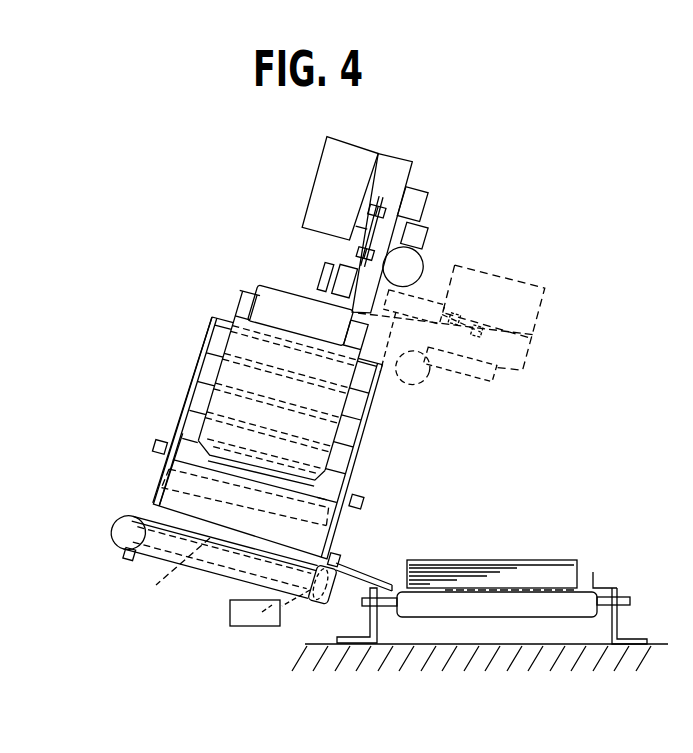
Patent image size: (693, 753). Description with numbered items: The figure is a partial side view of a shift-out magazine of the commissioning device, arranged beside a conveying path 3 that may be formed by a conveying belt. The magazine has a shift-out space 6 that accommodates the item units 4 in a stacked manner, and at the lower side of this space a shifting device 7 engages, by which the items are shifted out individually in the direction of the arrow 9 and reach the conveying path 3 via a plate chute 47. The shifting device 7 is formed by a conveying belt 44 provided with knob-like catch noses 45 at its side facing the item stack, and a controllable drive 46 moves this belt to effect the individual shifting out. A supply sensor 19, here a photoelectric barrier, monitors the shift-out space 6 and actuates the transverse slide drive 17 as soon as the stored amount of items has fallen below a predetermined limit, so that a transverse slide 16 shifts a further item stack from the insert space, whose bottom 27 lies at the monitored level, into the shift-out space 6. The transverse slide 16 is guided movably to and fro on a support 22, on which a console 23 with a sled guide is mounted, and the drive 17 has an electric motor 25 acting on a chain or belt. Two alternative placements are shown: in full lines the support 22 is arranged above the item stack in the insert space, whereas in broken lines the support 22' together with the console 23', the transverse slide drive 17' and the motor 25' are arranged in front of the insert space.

The conveying path 3 is at (496, 603).
The item units 4 is at (500, 560).
The shift-out space 6 is at (206, 317).
The shifting device 7 is at (124, 542).
The arrow 9 is at (229, 536).
The transverse slide 16 is at (262, 303).
The transverse slide drive 17 is at (429, 201).
The transverse slide drive 17' is at (492, 379).
The supply sensor 19 is at (160, 438).
The support 22 is at (334, 227).
The support 22' is at (490, 306).
The console 23 is at (321, 244).
The console 23' is at (426, 361).
The electric motor 25 is at (432, 253).
The electric motor 25' is at (439, 392).
The bottom 27 is at (153, 459).
The conveying belt 44 is at (176, 573).
The catch noses 45 is at (130, 556).
The controllable drive 46 is at (232, 620).
The plate chute 47 is at (360, 580).